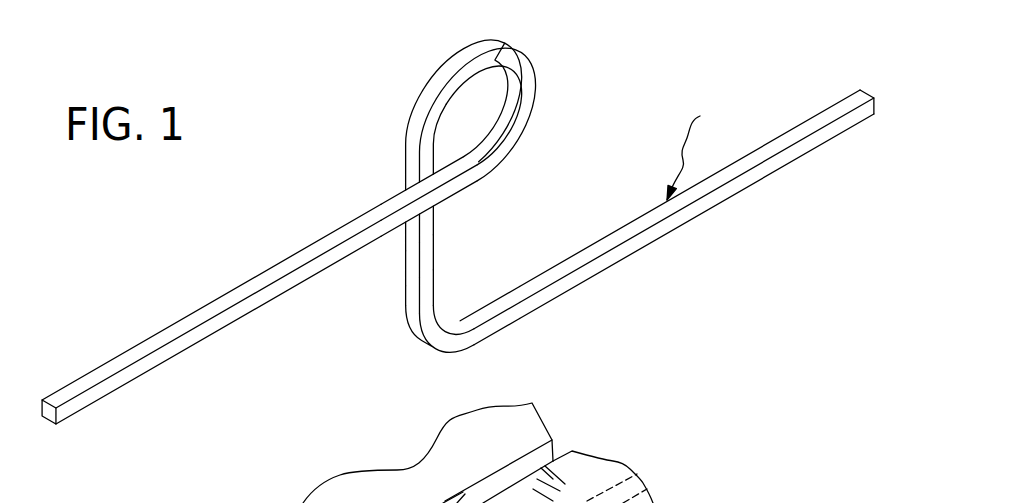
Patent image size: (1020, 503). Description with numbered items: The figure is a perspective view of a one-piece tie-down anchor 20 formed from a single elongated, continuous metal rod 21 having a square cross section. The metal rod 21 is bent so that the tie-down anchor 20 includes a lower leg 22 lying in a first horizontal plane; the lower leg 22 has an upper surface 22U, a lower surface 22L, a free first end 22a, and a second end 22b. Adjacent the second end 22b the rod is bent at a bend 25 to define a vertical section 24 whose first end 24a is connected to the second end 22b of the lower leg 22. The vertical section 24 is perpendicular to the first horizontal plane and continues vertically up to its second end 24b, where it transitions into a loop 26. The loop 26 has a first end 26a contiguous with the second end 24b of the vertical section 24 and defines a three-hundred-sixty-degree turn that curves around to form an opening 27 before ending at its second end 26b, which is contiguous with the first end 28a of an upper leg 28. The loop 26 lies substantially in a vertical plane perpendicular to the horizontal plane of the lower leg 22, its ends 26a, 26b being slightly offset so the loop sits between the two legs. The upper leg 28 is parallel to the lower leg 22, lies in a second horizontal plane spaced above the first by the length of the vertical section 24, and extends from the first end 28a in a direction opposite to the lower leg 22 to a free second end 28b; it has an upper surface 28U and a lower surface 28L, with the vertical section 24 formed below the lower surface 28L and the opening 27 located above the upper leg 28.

The tie-down anchor 20 is at (614, 99).
The metal rod 21 is at (700, 150).
The lower leg 22 is at (747, 180).
The upper surface 22U is at (787, 132).
The lower surface 22L is at (642, 249).
The free first end 22a is at (861, 89).
The second end 22b is at (461, 322).
The vertical section 24 is at (433, 257).
The first end 24a is at (435, 308).
The second end 24b is at (438, 212).
The bend 25 is at (432, 343).
The loop 26 is at (533, 60).
The first end 26a is at (455, 206).
The second end 26b is at (428, 185).
The opening 27 is at (483, 103).
The upper leg 28 is at (153, 336).
The upper surface 28U is at (265, 272).
The lower surface 28L is at (170, 359).
The first end 28a is at (400, 192).
The free second end 28b is at (49, 418).